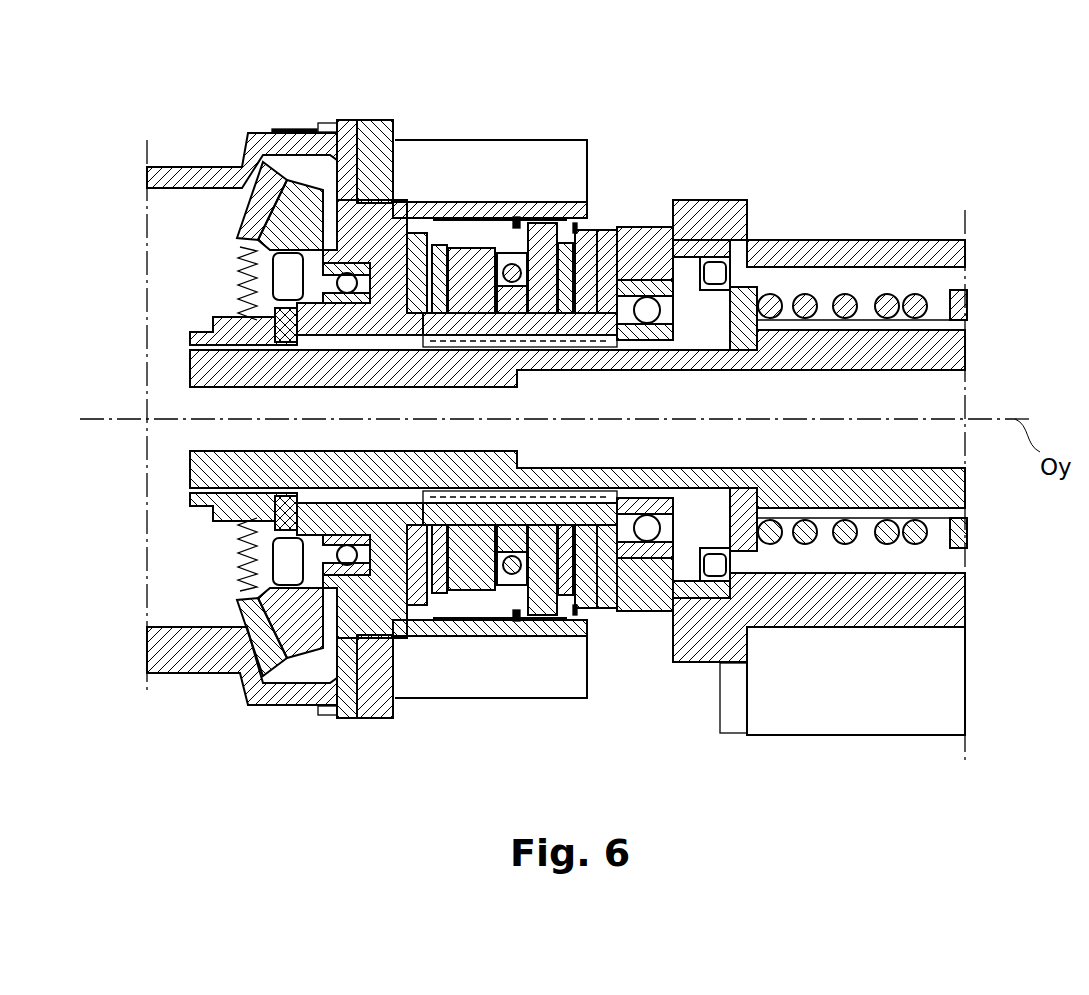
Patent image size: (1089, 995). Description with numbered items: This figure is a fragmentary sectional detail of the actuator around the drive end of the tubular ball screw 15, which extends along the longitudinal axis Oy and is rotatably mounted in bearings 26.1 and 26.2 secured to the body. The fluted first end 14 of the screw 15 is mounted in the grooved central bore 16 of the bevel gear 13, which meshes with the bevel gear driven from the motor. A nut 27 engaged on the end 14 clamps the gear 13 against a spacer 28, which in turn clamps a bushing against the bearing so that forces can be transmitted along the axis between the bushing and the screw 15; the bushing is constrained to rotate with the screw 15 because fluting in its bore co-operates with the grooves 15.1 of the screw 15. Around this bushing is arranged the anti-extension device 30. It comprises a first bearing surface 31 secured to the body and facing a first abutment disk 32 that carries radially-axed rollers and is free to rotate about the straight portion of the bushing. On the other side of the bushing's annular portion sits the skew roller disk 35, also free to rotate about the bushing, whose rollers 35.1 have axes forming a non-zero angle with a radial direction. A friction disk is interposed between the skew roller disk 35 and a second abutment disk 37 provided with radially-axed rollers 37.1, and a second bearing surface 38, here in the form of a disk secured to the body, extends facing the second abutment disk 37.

The bevel gear 13 is at (295, 140).
The fluted first end 14 is at (380, 143).
The tubular ball screw 15 is at (925, 345).
The grooves 15.1 is at (535, 348).
The grooved central bore 16 is at (237, 313).
The bearing 26.1 is at (655, 265).
The bearing 26.2 is at (327, 140).
The nut 27 is at (220, 500).
The spacer 28 is at (417, 610).
The anti-extension device 30 is at (515, 227).
The first bearing surface 31 is at (437, 600).
The first abutment disk 32 is at (467, 600).
The skew roller disk 35 is at (507, 600).
The rollers 35.1 is at (587, 600).
The second abutment disk 37 is at (577, 228).
The rollers 37.1 is at (567, 265).
The second bearing surface 38 is at (610, 600).